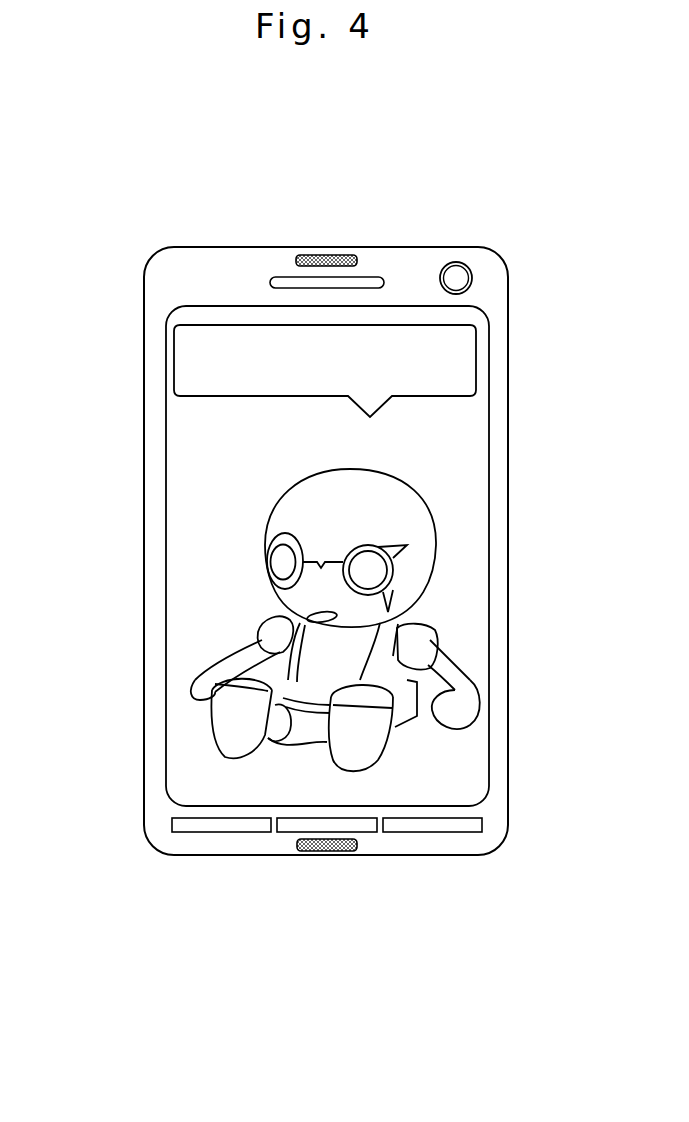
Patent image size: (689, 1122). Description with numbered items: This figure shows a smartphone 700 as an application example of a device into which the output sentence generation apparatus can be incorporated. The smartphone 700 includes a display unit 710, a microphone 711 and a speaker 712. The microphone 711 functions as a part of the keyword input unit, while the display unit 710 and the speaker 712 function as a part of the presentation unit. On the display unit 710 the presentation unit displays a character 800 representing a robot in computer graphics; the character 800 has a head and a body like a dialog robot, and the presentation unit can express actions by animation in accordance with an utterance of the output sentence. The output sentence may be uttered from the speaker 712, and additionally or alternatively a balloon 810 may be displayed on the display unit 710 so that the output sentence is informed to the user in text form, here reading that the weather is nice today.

The smartphone 700 is at (145, 155).
The display unit 710 is at (490, 388).
The microphone 711 is at (316, 851).
The speaker 712 is at (351, 254).
The character 800 is at (434, 520).
The balloon 810 is at (180, 393).